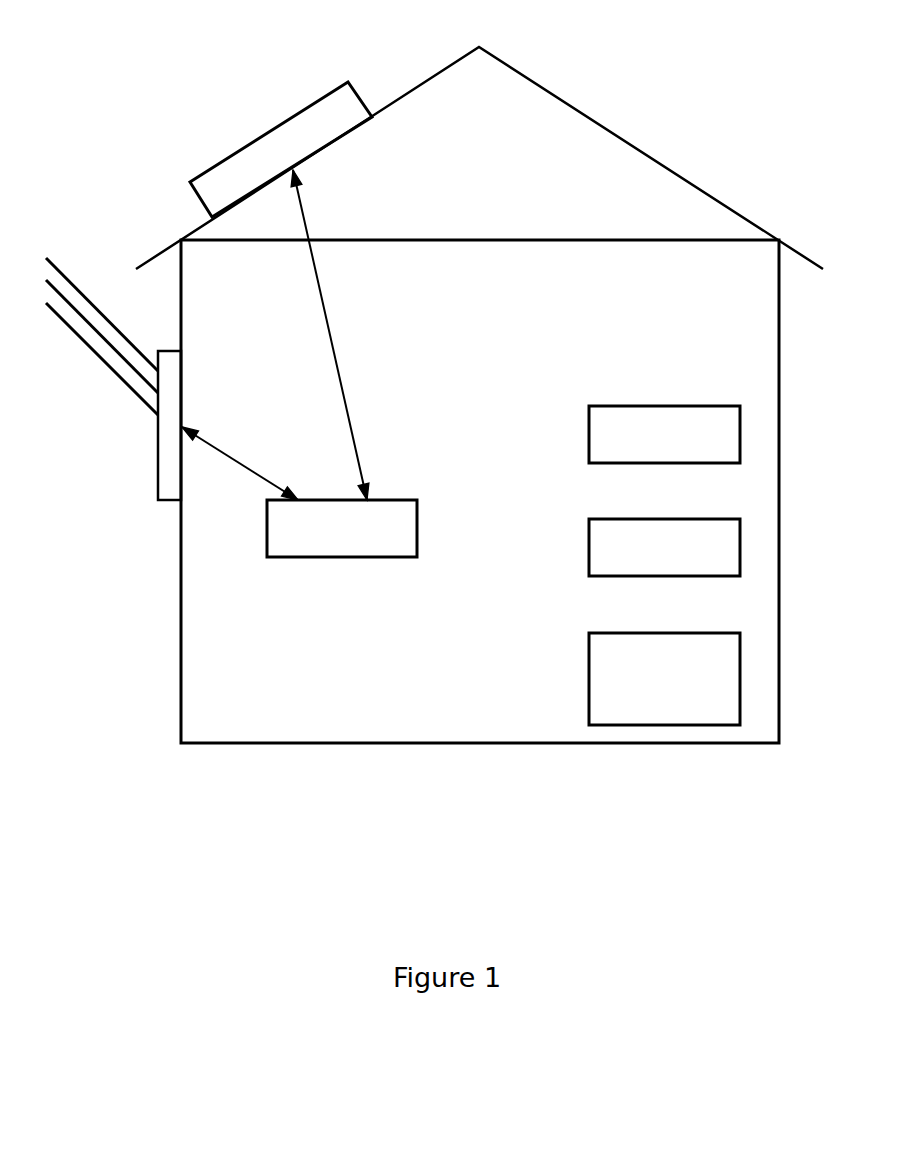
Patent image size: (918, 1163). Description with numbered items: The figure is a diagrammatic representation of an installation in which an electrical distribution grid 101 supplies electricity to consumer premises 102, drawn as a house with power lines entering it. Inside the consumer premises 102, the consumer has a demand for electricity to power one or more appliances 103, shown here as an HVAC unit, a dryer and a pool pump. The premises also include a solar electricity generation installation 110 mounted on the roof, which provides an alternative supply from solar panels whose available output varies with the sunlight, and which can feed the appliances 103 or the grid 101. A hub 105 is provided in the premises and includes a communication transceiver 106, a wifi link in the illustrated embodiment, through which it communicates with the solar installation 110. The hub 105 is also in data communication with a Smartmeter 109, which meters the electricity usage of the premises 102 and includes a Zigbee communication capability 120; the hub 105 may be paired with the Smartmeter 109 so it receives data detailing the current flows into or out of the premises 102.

The electrical distribution grid 101 is at (67, 283).
The consumer premises 102 is at (275, 737).
The appliances 103 is at (597, 430).
The hub 105 is at (338, 555).
The communication transceiver 106 is at (330, 337).
The Smartmeter 109 is at (158, 483).
The solar electricity generation installation 110 is at (315, 112).
The Zigbee communication capability 120 is at (260, 478).